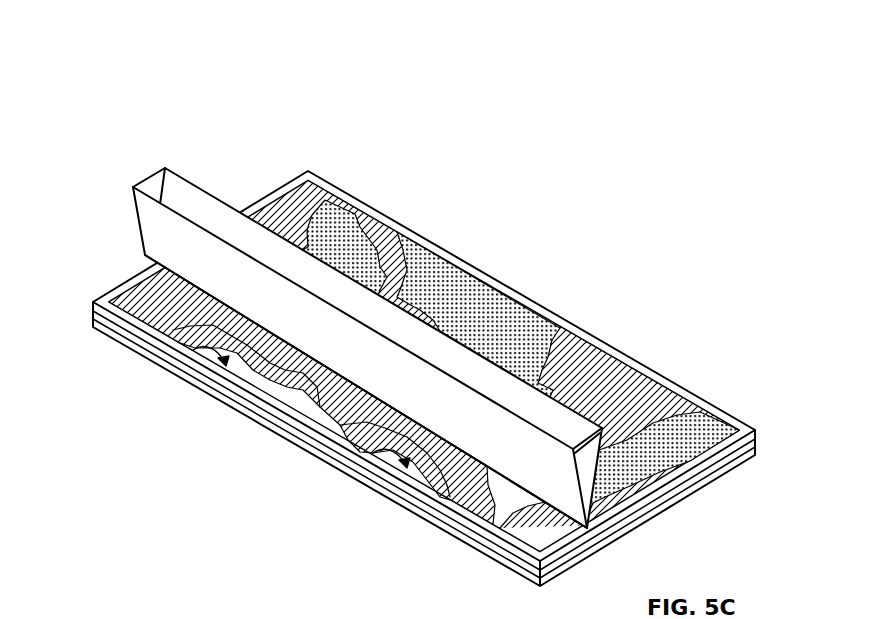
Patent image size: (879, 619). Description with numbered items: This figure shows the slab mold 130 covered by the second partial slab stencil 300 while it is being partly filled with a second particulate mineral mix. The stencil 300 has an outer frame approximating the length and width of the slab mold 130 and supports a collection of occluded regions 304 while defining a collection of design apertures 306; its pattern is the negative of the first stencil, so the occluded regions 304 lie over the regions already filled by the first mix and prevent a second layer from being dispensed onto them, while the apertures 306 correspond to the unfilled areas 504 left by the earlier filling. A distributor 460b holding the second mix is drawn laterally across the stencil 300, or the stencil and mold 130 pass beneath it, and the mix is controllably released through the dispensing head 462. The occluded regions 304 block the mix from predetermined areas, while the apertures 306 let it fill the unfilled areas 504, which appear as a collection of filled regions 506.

The second partial slab stencil 300 is at (747, 407).
The slab mold 130 is at (751, 486).
The occluded regions 304 is at (293, 212).
The filled regions 506 is at (343, 205).
The design apertures 306 is at (177, 345).
The unfilled areas 504 is at (301, 407).
The distributor 460b is at (133, 186).
The dispensing head 462 is at (145, 255).